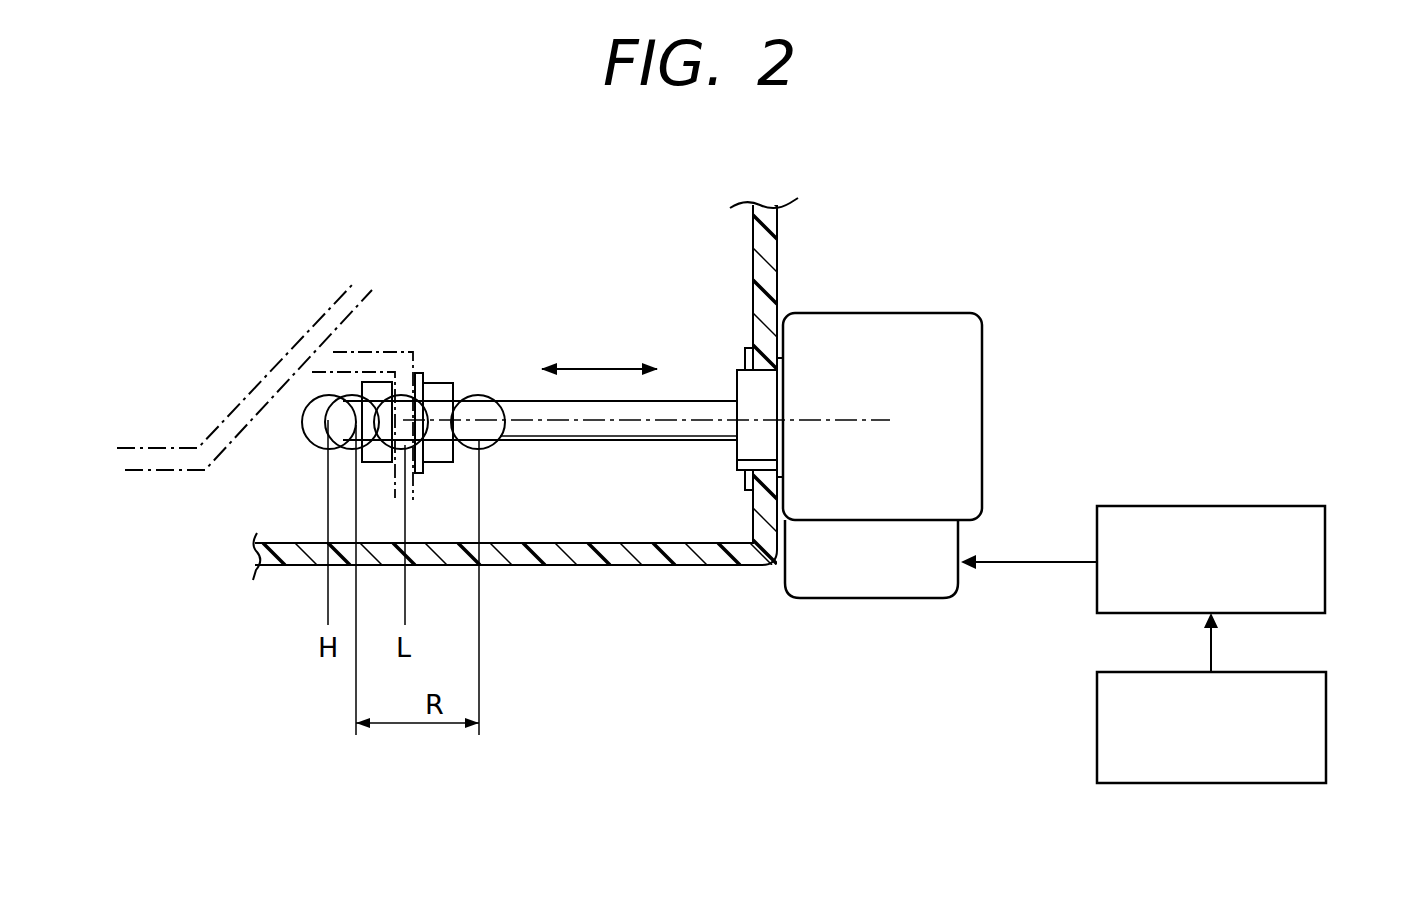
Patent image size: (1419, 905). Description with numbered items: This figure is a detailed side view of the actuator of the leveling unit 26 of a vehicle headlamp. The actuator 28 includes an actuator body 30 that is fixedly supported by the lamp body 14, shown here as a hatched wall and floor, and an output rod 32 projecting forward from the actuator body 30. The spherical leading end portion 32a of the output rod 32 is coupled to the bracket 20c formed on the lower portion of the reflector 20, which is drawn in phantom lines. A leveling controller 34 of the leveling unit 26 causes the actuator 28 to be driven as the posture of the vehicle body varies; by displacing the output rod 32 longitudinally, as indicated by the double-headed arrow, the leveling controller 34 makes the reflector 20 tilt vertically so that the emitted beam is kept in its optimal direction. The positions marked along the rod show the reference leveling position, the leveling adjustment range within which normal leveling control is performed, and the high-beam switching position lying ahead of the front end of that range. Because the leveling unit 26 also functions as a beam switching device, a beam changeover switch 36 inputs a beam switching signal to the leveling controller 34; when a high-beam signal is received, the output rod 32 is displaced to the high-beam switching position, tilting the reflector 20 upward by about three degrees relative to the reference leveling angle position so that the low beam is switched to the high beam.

The lamp body 14 is at (634, 572).
The reflector 20 is at (258, 386).
The bracket 20c is at (393, 350).
The leveling unit 26 is at (967, 390).
The actuator 28 is at (860, 306).
The actuator body 30 is at (930, 322).
The output rod 32 is at (578, 430).
The spherical leading end portion 32a is at (387, 435).
The leveling controller 34 is at (1325, 543).
The beam changeover switch 36 is at (1326, 723).